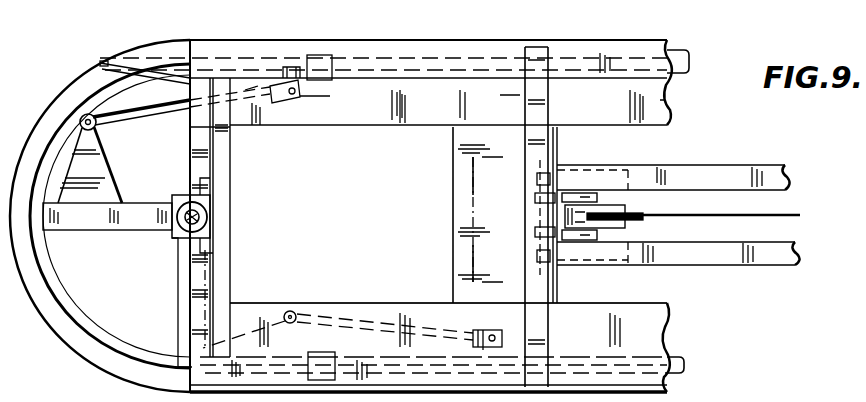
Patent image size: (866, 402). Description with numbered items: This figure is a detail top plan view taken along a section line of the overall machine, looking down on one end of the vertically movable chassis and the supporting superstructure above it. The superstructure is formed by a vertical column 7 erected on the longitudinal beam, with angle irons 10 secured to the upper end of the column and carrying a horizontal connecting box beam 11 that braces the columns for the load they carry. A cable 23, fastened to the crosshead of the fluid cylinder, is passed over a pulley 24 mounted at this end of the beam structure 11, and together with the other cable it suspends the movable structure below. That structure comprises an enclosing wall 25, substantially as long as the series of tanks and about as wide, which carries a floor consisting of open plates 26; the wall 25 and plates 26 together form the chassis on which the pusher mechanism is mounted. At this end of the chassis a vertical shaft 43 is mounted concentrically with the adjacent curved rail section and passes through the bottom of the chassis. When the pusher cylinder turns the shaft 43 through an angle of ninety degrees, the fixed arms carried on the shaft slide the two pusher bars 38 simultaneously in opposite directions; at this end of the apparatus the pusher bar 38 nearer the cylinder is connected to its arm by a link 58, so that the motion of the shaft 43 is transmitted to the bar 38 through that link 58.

The vertical column 7 is at (563, 192).
The angle iron 10 is at (494, 219).
The horizontal connecting box beam 11 is at (777, 168).
The cable 23 is at (773, 213).
The pulley 24 is at (643, 211).
The enclosing wall 25 is at (660, 327).
The open plate 26 is at (467, 200).
The pusher bar 38 is at (683, 60).
The vertical shaft 43 is at (203, 212).
The link 58 is at (343, 318).